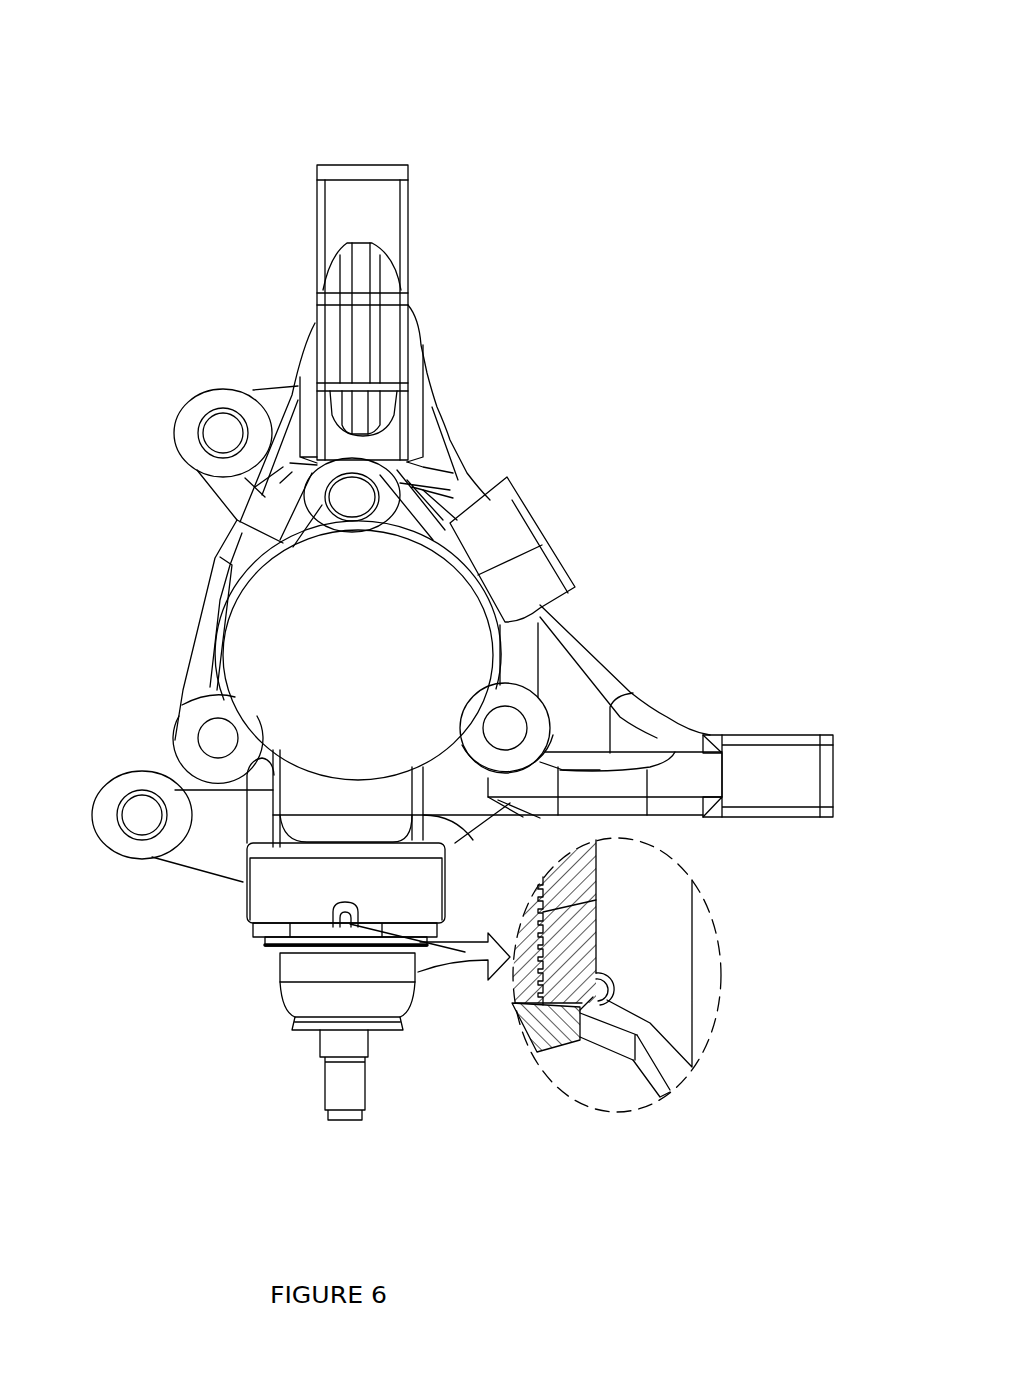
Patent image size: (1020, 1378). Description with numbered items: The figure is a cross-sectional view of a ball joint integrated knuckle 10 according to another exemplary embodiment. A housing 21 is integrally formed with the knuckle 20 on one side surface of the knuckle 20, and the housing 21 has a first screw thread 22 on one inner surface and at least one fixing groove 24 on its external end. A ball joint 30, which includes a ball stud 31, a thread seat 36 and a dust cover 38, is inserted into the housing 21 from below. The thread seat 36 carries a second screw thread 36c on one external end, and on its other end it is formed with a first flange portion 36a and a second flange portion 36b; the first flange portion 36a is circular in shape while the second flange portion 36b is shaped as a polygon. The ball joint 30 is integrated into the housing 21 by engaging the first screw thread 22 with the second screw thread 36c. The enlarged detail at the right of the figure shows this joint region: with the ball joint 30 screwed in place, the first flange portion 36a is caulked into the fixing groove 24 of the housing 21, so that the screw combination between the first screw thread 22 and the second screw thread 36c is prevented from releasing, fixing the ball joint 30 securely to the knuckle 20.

The ball joint integrated knuckle 10 is at (375, 143).
The knuckle 20 is at (563, 547).
The housing 21 is at (240, 905).
The first screw thread 22 is at (597, 900).
The fixing groove 24 is at (358, 908).
The ball joint 30 is at (280, 1037).
The ball stud 31 is at (325, 1083).
The thread seat 36 is at (479, 1047).
The first flange portion 36a is at (262, 940).
The second flange portion 36b is at (262, 948).
The second screw thread 36c is at (517, 1007).
The dust cover 38 is at (280, 978).